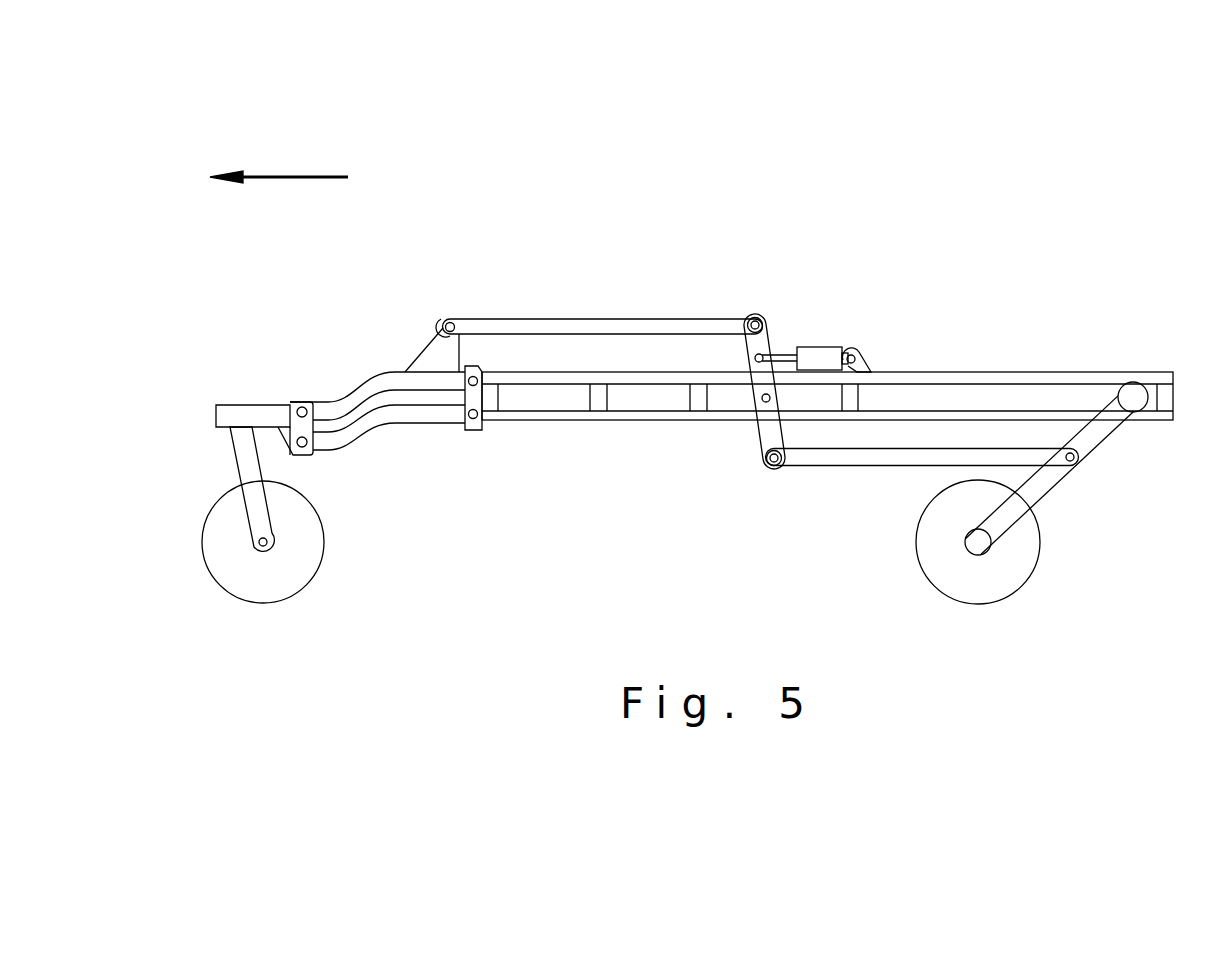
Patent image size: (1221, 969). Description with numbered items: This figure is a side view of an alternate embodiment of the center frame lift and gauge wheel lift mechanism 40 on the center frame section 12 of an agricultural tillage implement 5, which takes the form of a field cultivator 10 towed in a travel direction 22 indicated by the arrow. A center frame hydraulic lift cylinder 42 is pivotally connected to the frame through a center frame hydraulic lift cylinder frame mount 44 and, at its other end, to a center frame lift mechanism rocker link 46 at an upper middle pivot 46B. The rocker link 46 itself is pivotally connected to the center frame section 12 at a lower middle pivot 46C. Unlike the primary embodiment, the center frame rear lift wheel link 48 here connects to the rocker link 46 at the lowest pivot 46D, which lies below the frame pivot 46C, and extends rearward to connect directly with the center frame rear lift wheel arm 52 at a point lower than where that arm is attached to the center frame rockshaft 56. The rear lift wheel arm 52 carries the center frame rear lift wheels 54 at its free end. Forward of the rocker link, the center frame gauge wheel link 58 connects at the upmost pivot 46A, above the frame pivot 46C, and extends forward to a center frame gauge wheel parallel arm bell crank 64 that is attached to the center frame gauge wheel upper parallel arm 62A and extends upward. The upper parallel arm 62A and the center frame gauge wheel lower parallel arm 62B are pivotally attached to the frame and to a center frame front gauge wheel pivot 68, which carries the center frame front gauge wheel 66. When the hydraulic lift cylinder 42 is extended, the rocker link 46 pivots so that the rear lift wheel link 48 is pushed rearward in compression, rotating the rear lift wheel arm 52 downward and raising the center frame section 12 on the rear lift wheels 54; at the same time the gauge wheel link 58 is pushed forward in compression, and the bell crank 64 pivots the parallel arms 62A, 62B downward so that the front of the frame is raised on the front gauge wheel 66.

The agricultural tillage implement 5 is at (768, 210).
The field cultivator 10 is at (840, 178).
The center frame section 12 is at (1000, 372).
The travel direction 22 is at (291, 177).
The center frame lift and gauge wheel lift mechanism 40 is at (566, 316).
The center frame hydraulic lift cylinder 42 is at (828, 347).
The center frame hydraulic lift cylinder frame mount 44 is at (866, 354).
The center frame lift mechanism rocker link 46 is at (754, 388).
The upmost pivot 46A is at (752, 318).
The upper middle pivot 46B is at (755, 358).
The lower middle pivot 46C is at (762, 403).
The lowest pivot 46D is at (772, 466).
The center frame rear lift wheel link 48 is at (893, 465).
The center frame rear lift wheel arm 52 is at (1105, 440).
The center frame rear lift wheels 54 is at (1037, 560).
The center frame rockshaft 56 is at (1133, 383).
The center frame gauge wheel link 58 is at (630, 318).
The center frame gauge wheel upper parallel arm 62A is at (357, 382).
The center frame gauge wheel lower parallel arm 62B is at (362, 441).
The center frame gauge wheel parallel arm bell crank 64 is at (440, 320).
The center frame front gauge wheel 66 is at (204, 553).
The center frame front gauge wheel pivot 68 is at (246, 405).